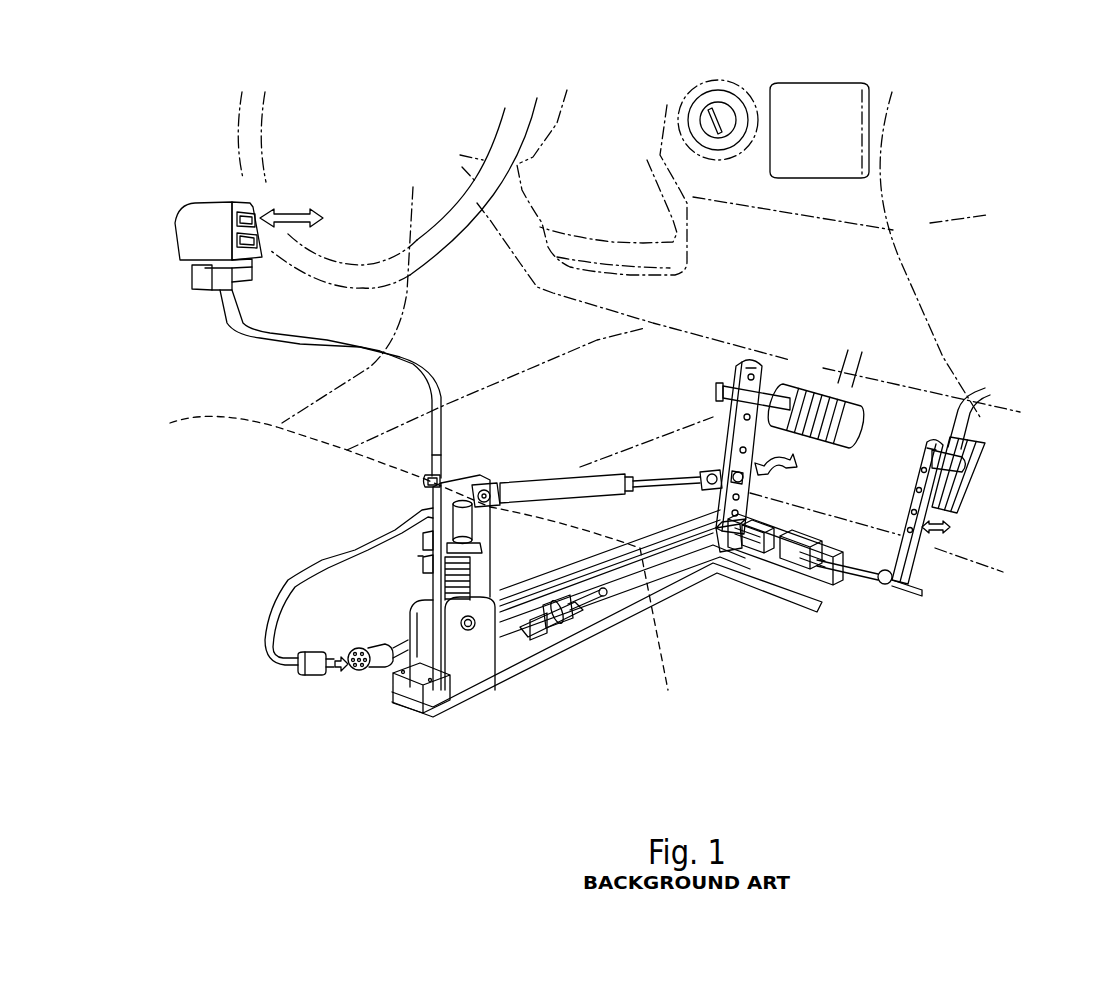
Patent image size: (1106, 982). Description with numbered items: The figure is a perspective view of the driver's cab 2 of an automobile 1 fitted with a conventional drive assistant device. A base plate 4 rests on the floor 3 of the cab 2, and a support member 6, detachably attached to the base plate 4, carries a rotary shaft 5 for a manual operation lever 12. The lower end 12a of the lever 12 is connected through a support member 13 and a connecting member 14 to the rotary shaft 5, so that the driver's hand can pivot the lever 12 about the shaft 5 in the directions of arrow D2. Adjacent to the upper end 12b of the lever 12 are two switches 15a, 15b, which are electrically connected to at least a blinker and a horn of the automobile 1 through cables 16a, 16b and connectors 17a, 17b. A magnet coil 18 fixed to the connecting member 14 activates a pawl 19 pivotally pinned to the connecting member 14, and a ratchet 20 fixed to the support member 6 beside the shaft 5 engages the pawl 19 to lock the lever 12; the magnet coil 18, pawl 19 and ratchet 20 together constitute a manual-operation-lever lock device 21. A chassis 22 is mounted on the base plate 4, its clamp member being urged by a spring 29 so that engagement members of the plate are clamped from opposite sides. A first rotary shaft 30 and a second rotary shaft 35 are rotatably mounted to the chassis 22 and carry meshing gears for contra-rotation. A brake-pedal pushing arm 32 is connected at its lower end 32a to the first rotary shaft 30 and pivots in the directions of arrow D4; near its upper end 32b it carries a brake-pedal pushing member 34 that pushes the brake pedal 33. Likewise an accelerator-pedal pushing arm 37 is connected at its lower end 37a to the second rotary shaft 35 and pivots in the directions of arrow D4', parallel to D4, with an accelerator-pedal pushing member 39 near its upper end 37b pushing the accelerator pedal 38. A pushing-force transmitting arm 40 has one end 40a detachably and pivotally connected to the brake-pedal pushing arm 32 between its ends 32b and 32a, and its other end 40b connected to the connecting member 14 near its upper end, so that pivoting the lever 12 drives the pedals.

The automobile 1 is at (498, 316).
The driver's cab 2 is at (770, 278).
The floor 3 is at (752, 705).
The base plate 4 is at (667, 588).
The rotary shaft 5 is at (460, 667).
The support member 6 is at (462, 677).
The manual operation lever 12 is at (432, 364).
The lower end of the manual operation lever 12a is at (460, 450).
The upper end of the manual operation lever 12b is at (240, 288).
The support member 13 is at (424, 483).
The connecting member 14 is at (497, 547).
The switch 15a is at (230, 201).
The switch 15b is at (262, 253).
The cable 16a is at (553, 580).
The cable 16b is at (327, 563).
The connector 17a is at (366, 646).
The connector 17b is at (314, 652).
The magnet coil 18 is at (477, 527).
The pawl 19 is at (442, 582).
The ratchet 20 is at (482, 583).
The manual-operation-lever lock device 21 is at (408, 556).
The chassis 22 is at (823, 585).
The spring 29 is at (775, 582).
The first rotary shaft 30 is at (745, 567).
The brake-pedal pushing arm 32 is at (735, 390).
The lower end of the brake-pedal pushing arm 32a is at (723, 530).
The upper end of the brake-pedal pushing arm 32b is at (738, 372).
The brake pedal 33 is at (840, 437).
The brake-pedal pushing member 34 is at (790, 386).
The second rotary shaft 35 is at (857, 577).
The accelerator-pedal pushing arm 37 is at (923, 560).
The lower end of the accelerator-pedal pushing arm 37a is at (900, 587).
The upper end of the accelerator-pedal pushing arm 37b is at (930, 440).
The accelerator pedal 38 is at (987, 467).
The accelerator-pedal pushing member 39 is at (963, 413).
The pushing-force transmitting arm 40 is at (565, 472).
The one end of the pushing-force transmitting arm 40a is at (715, 485).
The other end of the pushing-force transmitting arm 40b is at (495, 480).
The directions of arrow D2 is at (313, 184).
The directions of arrow D4 is at (803, 478).
The directions of arrow D4' is at (974, 535).